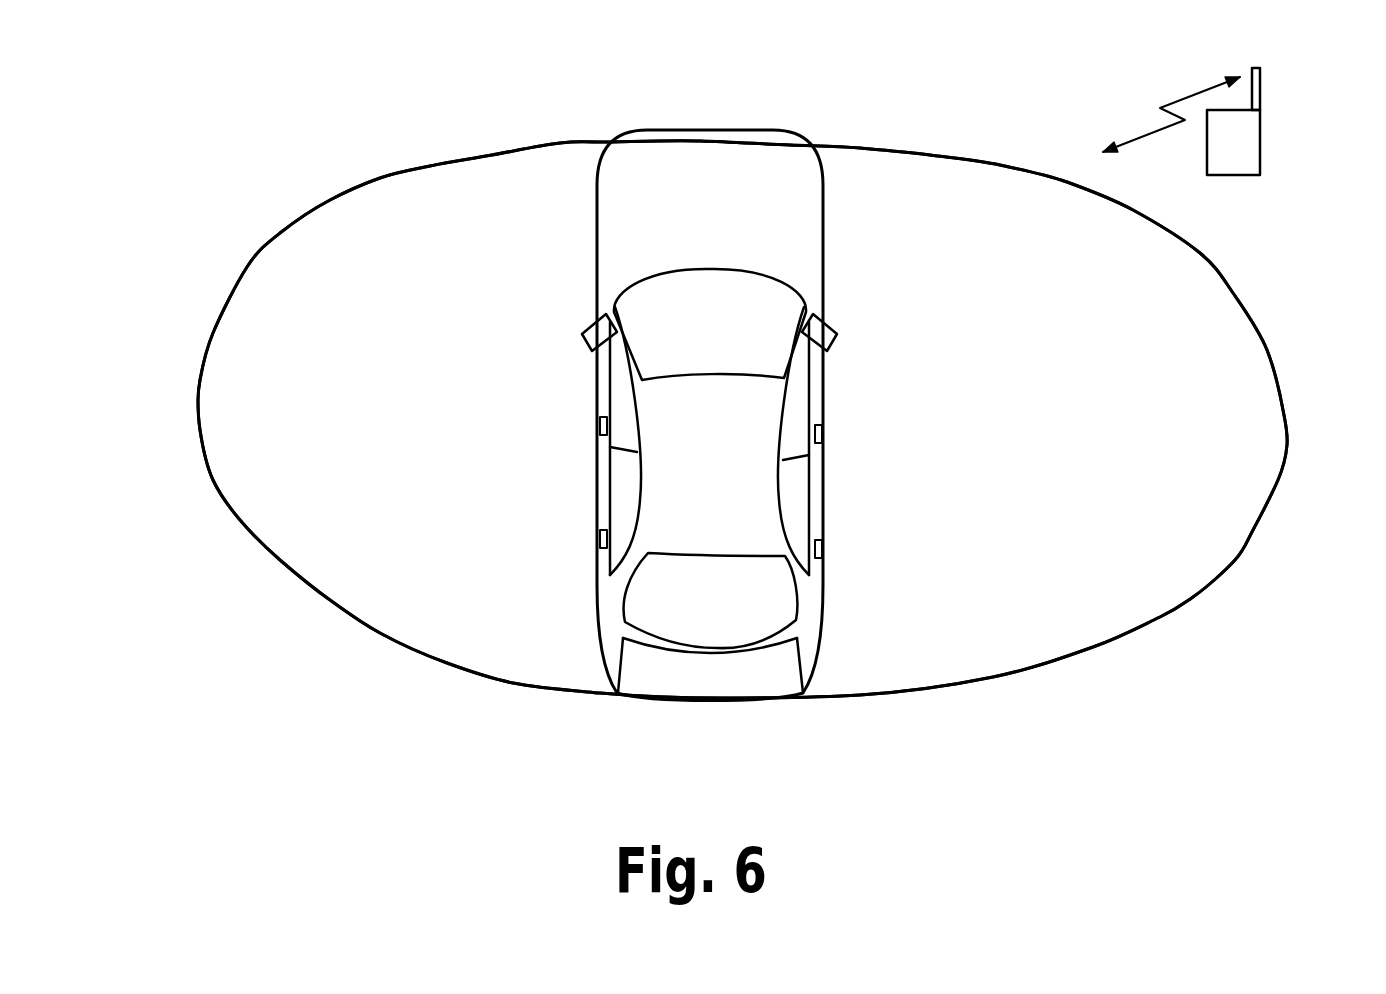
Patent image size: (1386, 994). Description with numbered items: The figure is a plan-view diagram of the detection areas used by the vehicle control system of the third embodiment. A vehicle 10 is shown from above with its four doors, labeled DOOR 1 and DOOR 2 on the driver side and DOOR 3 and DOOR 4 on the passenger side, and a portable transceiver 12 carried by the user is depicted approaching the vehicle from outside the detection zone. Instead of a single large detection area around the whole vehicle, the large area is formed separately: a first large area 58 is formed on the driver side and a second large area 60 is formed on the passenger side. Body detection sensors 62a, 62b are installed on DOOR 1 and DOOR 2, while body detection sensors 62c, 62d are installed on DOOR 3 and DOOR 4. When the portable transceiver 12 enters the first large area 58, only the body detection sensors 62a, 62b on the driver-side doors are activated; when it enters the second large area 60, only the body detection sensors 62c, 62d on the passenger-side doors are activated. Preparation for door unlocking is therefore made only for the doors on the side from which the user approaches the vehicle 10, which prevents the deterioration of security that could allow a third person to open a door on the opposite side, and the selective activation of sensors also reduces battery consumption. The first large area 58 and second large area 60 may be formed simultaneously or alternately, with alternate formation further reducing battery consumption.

The vehicle 10 is at (710, 415).
The portable transceiver 12 is at (1252, 153).
The first large area 58 is at (1045, 173).
The second large area 60 is at (492, 157).
The body detection sensor 62a is at (823, 437).
The body detection sensor 62b is at (823, 555).
The body detection sensor 62c is at (597, 543).
The body detection sensor 62d is at (598, 425).
The door 1 DOOR 1 is at (822, 400).
The door 2 DOOR 2 is at (820, 520).
The door 3 DOOR 3 is at (597, 507).
The door 4 DOOR 4 is at (597, 403).